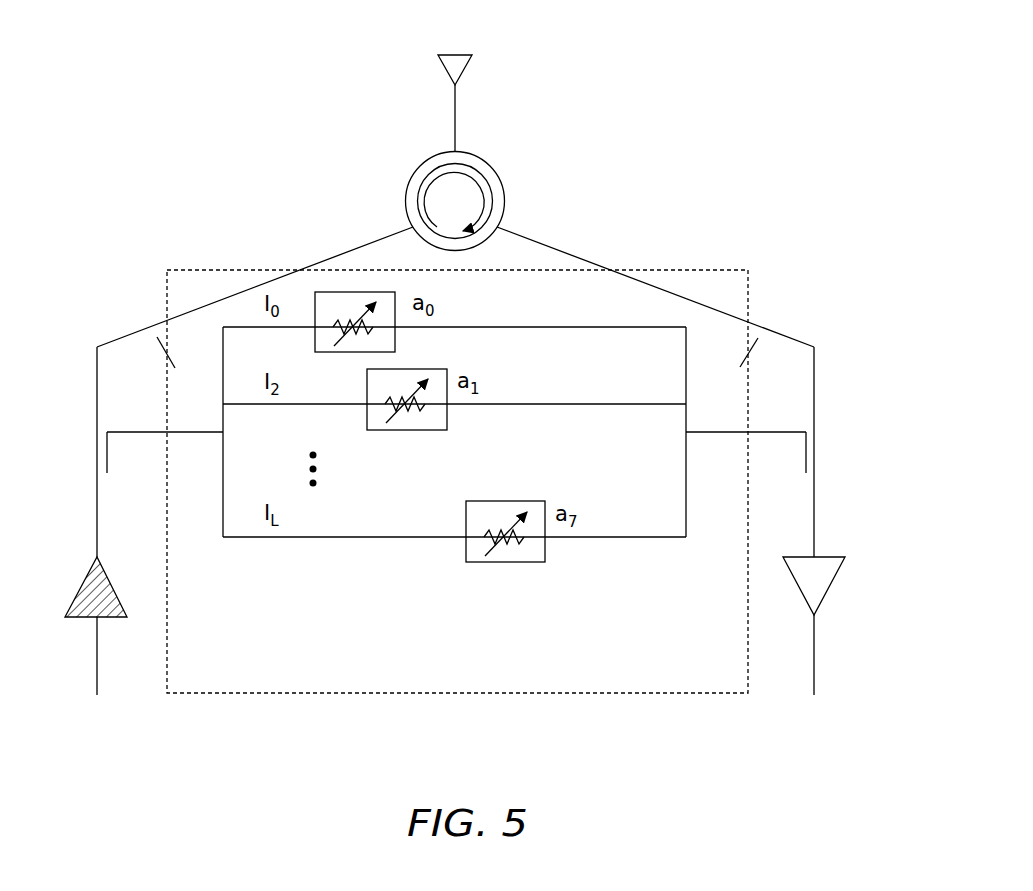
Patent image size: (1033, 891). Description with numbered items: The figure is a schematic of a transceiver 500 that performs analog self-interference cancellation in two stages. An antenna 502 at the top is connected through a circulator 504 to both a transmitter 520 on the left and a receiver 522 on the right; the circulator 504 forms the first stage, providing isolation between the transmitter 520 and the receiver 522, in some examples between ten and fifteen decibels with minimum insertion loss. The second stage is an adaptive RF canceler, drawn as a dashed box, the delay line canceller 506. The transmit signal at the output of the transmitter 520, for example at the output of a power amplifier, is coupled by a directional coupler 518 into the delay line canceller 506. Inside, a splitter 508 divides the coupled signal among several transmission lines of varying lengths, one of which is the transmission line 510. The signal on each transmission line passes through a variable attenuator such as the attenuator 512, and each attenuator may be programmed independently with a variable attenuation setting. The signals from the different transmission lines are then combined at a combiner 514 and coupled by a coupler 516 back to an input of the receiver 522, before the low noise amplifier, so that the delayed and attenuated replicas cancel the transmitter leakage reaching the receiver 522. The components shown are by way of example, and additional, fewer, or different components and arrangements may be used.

The transceiver 500 is at (787, 50).
The antenna 502 is at (440, 70).
The circulator 504 is at (408, 207).
The delay line canceller 506 is at (673, 270).
The splitter 508 is at (230, 434).
The transmission line 510 is at (340, 540).
The attenuator 512 is at (508, 553).
The combiner 514 is at (690, 453).
The coupler 516 is at (768, 431).
The coupler 518 is at (148, 431).
The transmitter 520 is at (78, 589).
The receiver 522 is at (830, 586).